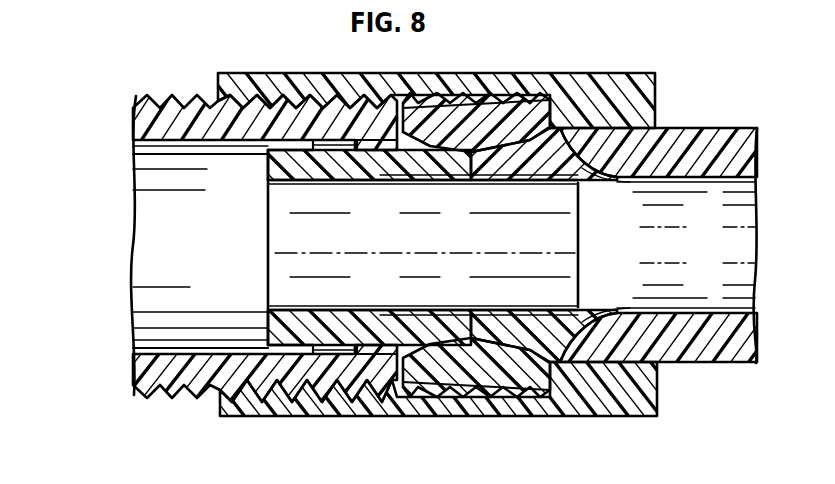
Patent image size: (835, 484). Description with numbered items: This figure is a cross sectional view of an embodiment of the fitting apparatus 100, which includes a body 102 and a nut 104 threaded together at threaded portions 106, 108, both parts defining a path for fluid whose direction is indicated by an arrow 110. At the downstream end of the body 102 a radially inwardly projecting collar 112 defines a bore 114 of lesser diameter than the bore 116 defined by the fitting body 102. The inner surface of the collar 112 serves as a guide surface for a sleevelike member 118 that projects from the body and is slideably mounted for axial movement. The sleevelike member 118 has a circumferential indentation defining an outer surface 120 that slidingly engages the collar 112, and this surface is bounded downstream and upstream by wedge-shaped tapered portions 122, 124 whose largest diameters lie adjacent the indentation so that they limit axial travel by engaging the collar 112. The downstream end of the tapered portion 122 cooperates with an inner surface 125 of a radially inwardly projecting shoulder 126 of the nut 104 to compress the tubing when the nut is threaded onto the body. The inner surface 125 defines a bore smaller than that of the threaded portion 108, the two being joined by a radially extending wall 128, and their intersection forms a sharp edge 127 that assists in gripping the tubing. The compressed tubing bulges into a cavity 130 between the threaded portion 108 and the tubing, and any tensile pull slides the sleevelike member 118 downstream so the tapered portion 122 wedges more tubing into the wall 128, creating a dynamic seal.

The fitting apparatus 100 is at (104, 333).
The body 102 is at (132, 380).
The nut 104 is at (668, 73).
The threaded portion 106 is at (157, 97).
The threaded portion 108 is at (521, 103).
The arrow 110 is at (673, 243).
The collar 112 is at (371, 346).
The bore 114 is at (368, 183).
The bore 116 is at (135, 257).
The sleevelike member 118 is at (258, 279).
The outer surface 120 is at (334, 151).
The tapered portion 122 is at (472, 182).
The tapered portion 124 is at (268, 163).
The inner surface 125 is at (627, 174).
The shoulder 126 is at (625, 112).
The sharp edge 127 is at (550, 132).
The radially extending wall 128 is at (521, 413).
The cavity 130 is at (519, 400).